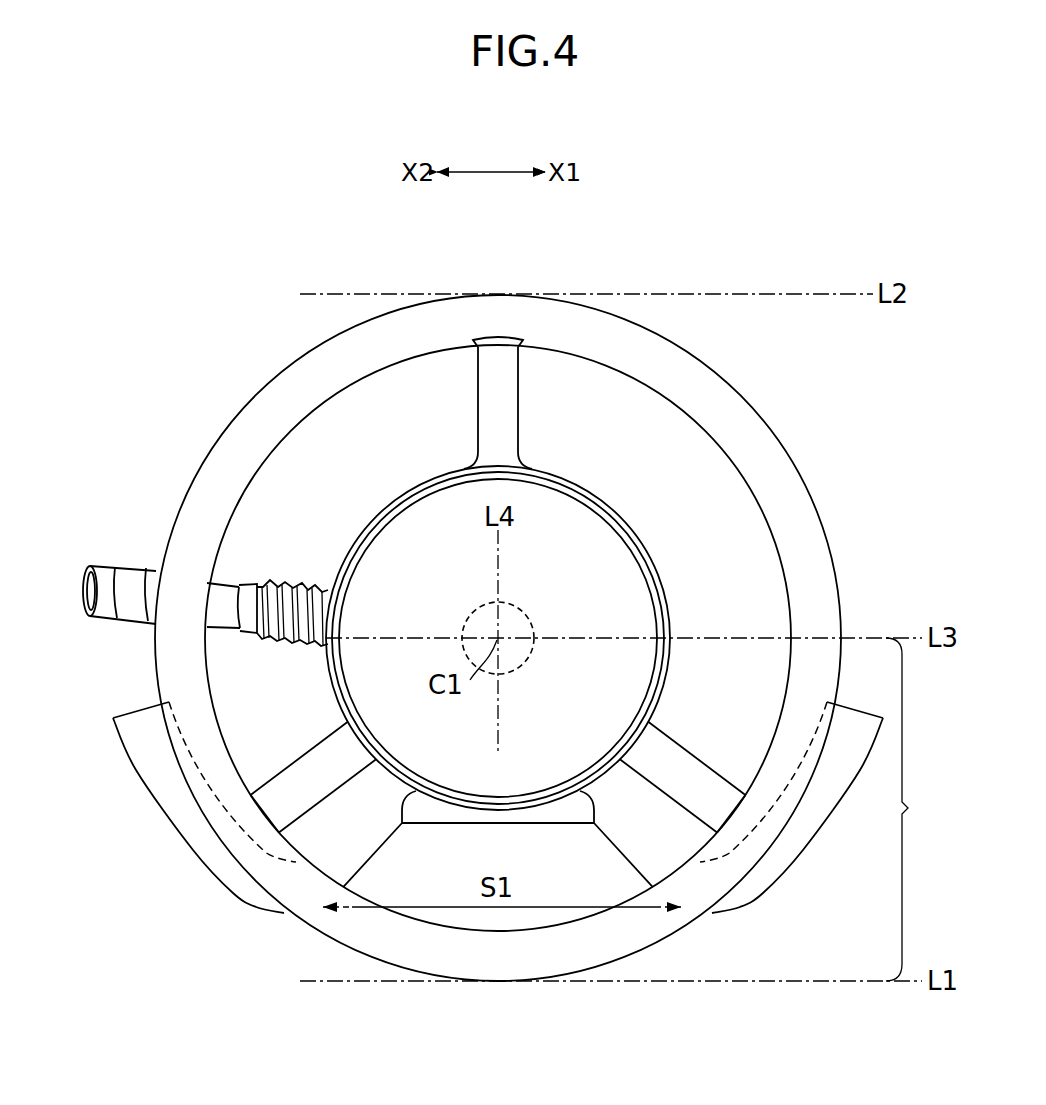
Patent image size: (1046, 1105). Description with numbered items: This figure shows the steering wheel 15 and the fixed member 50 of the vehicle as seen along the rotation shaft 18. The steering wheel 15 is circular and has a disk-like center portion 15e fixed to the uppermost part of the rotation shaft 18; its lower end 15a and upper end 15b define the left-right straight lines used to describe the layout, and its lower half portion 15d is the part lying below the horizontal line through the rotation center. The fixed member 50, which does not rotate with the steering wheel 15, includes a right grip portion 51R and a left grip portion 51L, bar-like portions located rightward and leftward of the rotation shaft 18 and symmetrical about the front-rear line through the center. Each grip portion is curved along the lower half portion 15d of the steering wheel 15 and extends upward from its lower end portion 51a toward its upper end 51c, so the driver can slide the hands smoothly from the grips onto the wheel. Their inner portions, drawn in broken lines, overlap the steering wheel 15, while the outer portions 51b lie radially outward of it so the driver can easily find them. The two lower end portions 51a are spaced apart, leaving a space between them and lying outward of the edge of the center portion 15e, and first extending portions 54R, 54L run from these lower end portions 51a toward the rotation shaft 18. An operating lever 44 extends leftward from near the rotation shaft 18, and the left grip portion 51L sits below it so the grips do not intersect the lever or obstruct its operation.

The steering wheel 15 is at (764, 410).
The lower end of the steering wheel 15a is at (500, 962).
The upper end of the steering wheel 15b is at (500, 314).
The lower half portion of the steering wheel 15d is at (924, 809).
The center portion of the steering wheel 15e is at (612, 556).
The rotation shaft 18 is at (528, 612).
The operating lever 44 is at (128, 576).
The fixed member 50 is at (463, 828).
The left grip portion 51L is at (157, 770).
The right grip portion 51R is at (792, 853).
The lower end portion of the grip portion 51a is at (277, 906).
The outer portion of the grip portion 51b is at (140, 700).
The upper end of the grip portion 51c is at (132, 728).
The left first extending portion 54L is at (355, 858).
The right first extending portion 54R is at (642, 858).